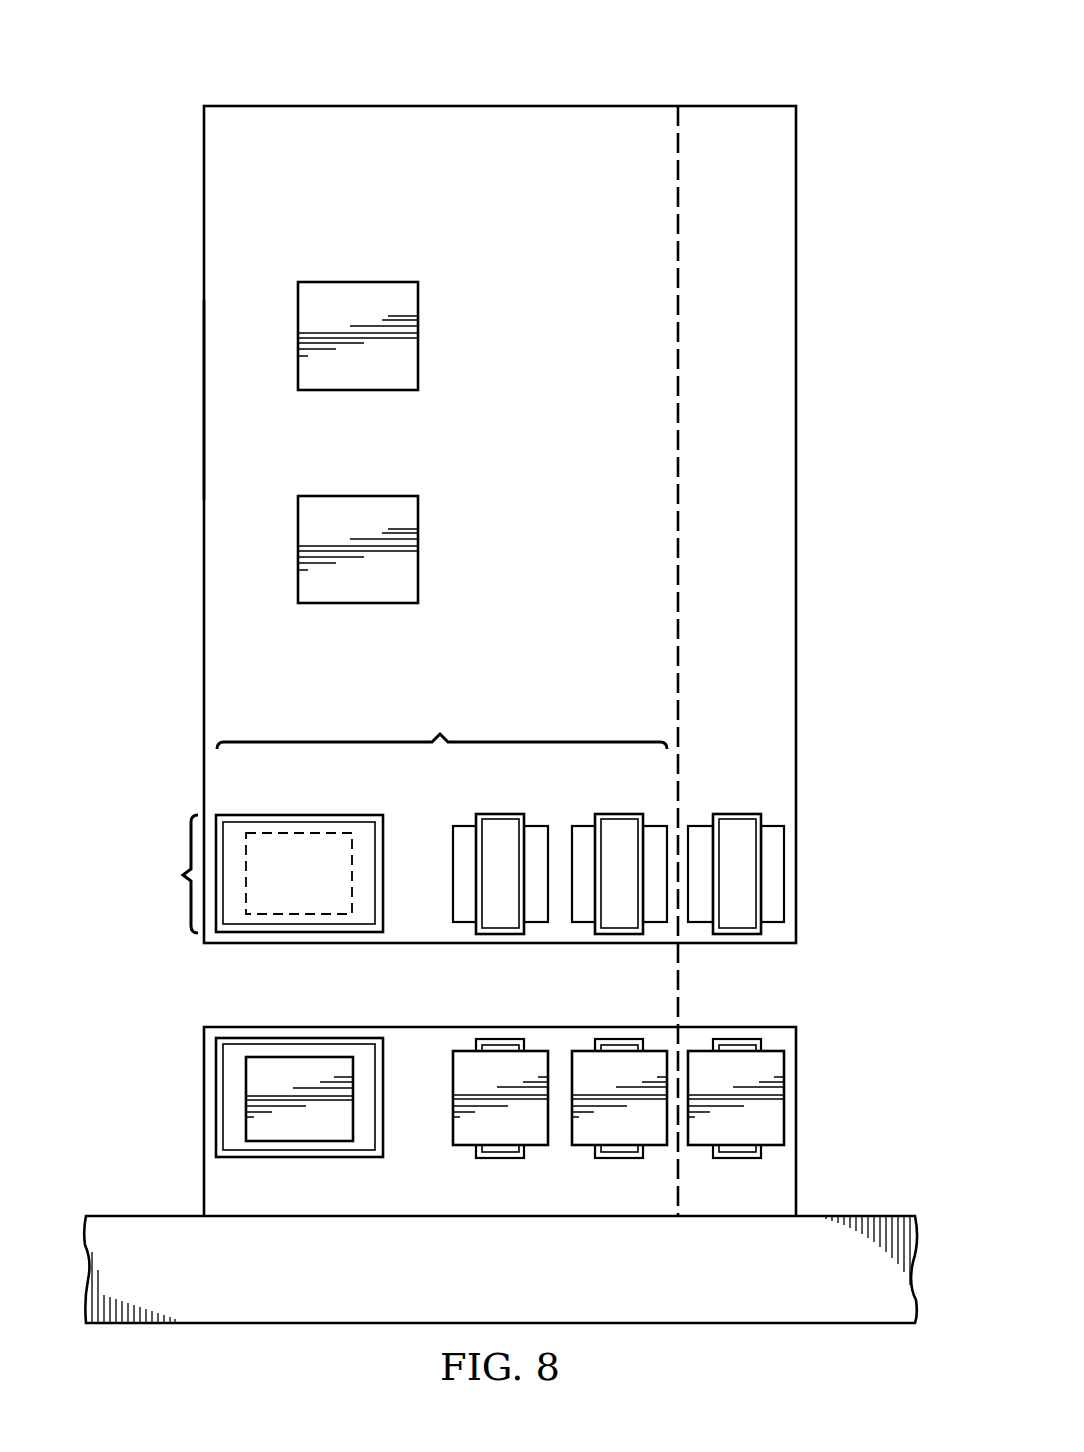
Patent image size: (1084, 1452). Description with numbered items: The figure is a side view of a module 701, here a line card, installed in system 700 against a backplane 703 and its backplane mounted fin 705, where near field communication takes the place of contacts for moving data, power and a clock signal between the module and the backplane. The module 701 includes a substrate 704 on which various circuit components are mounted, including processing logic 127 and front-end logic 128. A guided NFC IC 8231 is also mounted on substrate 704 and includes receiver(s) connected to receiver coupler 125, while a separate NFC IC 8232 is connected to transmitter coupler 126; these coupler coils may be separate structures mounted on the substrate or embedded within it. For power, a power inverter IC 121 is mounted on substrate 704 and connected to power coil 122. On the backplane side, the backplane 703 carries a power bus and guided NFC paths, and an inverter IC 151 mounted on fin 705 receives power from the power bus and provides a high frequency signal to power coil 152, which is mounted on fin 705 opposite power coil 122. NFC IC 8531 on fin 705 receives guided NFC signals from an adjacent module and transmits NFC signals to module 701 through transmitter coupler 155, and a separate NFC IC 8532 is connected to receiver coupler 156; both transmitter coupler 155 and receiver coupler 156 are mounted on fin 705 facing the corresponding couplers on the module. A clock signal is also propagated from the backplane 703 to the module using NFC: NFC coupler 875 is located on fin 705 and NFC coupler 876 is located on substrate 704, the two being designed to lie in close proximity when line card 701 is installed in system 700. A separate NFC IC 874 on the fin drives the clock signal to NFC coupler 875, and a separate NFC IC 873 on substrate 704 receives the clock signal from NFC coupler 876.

The system 700 is at (148, 84).
The module 701 is at (298, 106).
The backplane 703 is at (300, 1324).
The substrate 704 is at (204, 400).
The backplane mounted fin 705 is at (204, 1122).
The power inverter IC 121 is at (298, 833).
The power coil 122 is at (292, 933).
The receiver coupler 125 is at (492, 934).
The transmitter coupler 126 is at (610, 934).
The processing logic 127 is at (358, 496).
The front-end logic 128 is at (358, 282).
The inverter IC 151 is at (305, 1057).
The power coil 152 is at (216, 1097).
The transmitter coupler 155 is at (510, 1039).
The receiver coupler 156 is at (628, 1039).
The NFC IC 873 is at (703, 826).
The NFC IC 874 is at (703, 1147).
The NFC coupler 875 is at (746, 1039).
The NFC coupler 876 is at (728, 934).
The guided NFC IC 8231 is at (465, 826).
The NFC IC 8232 is at (583, 826).
The NFC IC 8531 is at (465, 1147).
The NFC IC 8532 is at (583, 1147).